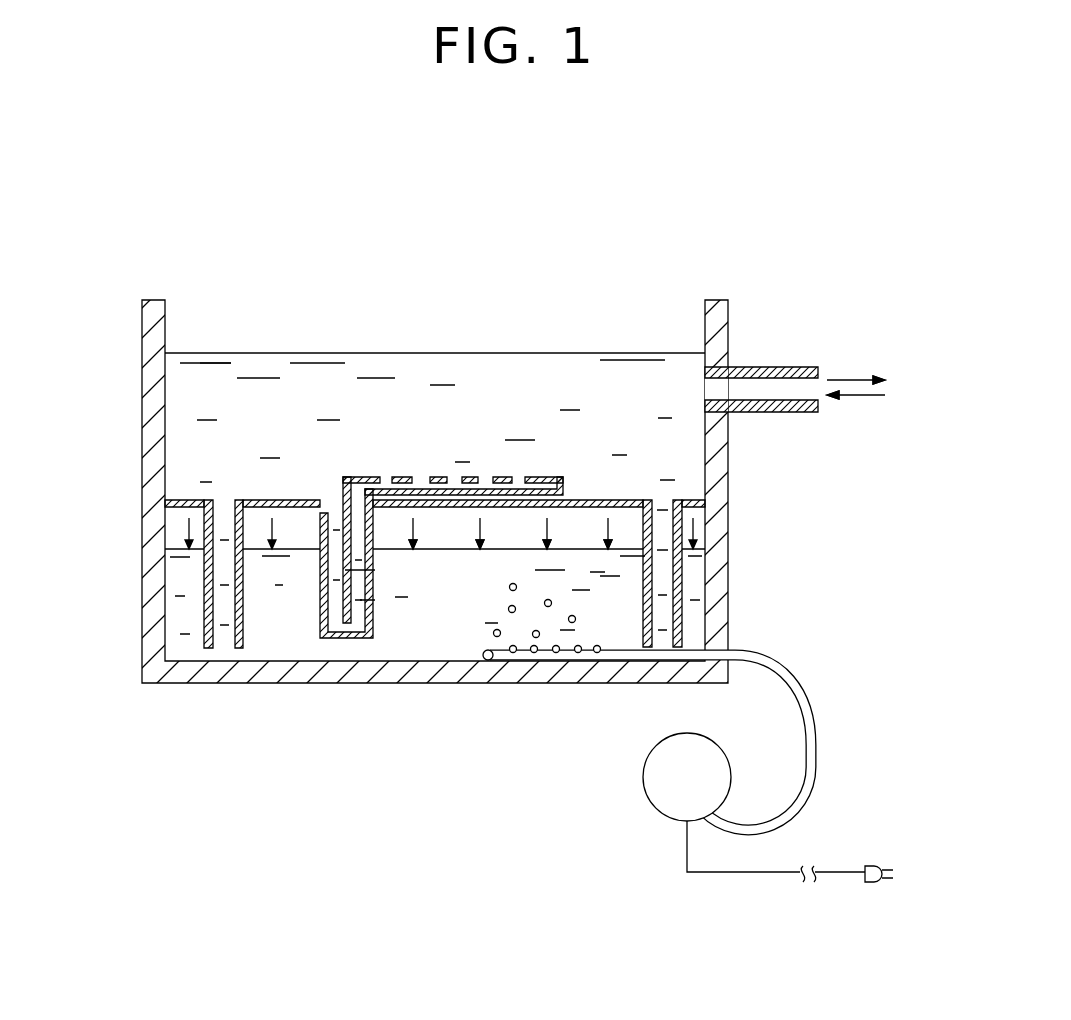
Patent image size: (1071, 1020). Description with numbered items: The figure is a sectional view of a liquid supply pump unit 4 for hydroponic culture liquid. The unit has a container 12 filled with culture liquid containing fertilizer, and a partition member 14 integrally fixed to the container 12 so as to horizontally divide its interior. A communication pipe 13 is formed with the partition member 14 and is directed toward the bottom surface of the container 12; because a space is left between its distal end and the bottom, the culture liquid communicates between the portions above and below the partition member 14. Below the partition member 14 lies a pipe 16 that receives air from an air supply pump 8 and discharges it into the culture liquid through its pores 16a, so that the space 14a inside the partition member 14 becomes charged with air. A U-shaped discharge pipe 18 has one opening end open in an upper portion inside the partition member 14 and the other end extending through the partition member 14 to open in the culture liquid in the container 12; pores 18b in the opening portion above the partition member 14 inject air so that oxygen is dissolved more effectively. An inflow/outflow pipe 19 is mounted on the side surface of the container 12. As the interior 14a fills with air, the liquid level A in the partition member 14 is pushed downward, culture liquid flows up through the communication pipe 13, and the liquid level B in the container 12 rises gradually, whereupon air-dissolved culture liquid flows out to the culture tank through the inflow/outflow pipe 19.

The liquid supply pump unit 4 is at (612, 320).
The air supply pump 8 is at (645, 787).
The container 12 is at (728, 500).
The communication pipe 13 is at (207, 582).
The partition member 14 is at (187, 500).
The space inside the partition member 14a is at (578, 532).
The pipe 16 is at (490, 650).
The pores 16a is at (513, 653).
The discharge pipe 18 is at (318, 618).
The pores 18b is at (403, 477).
The inflow/outflow pipe 19 is at (788, 387).
The liquid level in the partition member A is at (178, 550).
The liquid level in the container B is at (224, 352).